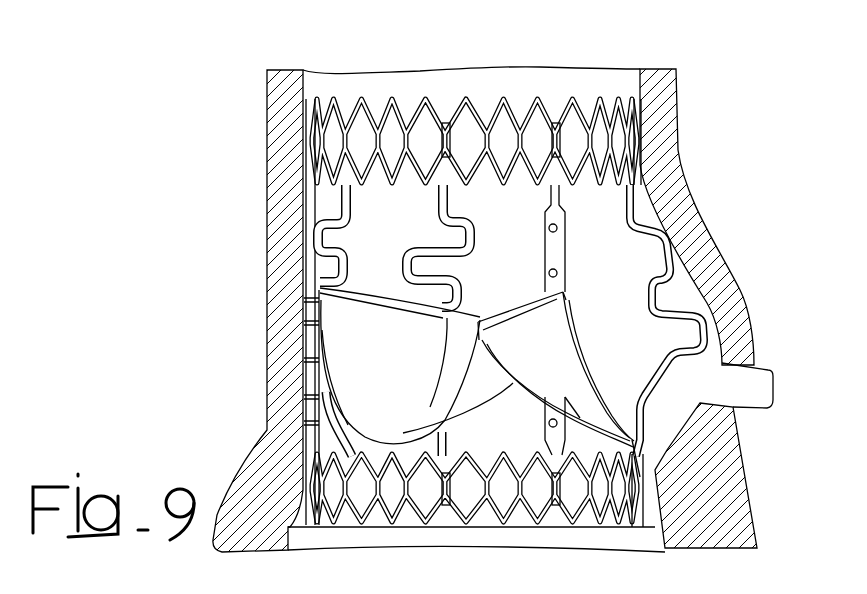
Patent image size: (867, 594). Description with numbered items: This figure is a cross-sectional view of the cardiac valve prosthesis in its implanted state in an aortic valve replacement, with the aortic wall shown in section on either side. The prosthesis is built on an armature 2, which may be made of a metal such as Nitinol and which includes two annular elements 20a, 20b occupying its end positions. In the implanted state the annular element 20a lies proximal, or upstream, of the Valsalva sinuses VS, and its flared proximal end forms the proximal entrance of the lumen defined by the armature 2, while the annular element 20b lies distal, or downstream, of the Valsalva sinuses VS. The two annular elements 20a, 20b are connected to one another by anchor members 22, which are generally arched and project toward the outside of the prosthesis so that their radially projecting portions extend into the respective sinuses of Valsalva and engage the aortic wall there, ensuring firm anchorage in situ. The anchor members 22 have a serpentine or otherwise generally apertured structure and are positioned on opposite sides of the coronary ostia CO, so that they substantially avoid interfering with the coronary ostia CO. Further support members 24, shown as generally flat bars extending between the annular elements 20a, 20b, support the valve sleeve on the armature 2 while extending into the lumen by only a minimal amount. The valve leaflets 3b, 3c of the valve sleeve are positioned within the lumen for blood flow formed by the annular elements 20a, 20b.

The armature 2 is at (303, 136).
The annular element 20a is at (610, 530).
The annular element 20b is at (618, 99).
The anchor member 22 is at (400, 270).
The support member 24 is at (309, 164).
The valve leaflet 3b is at (633, 440).
The valve leaflet 3c is at (352, 337).
The Valsalva sinuses VS is at (688, 290).
The coronary ostia CO is at (745, 387).